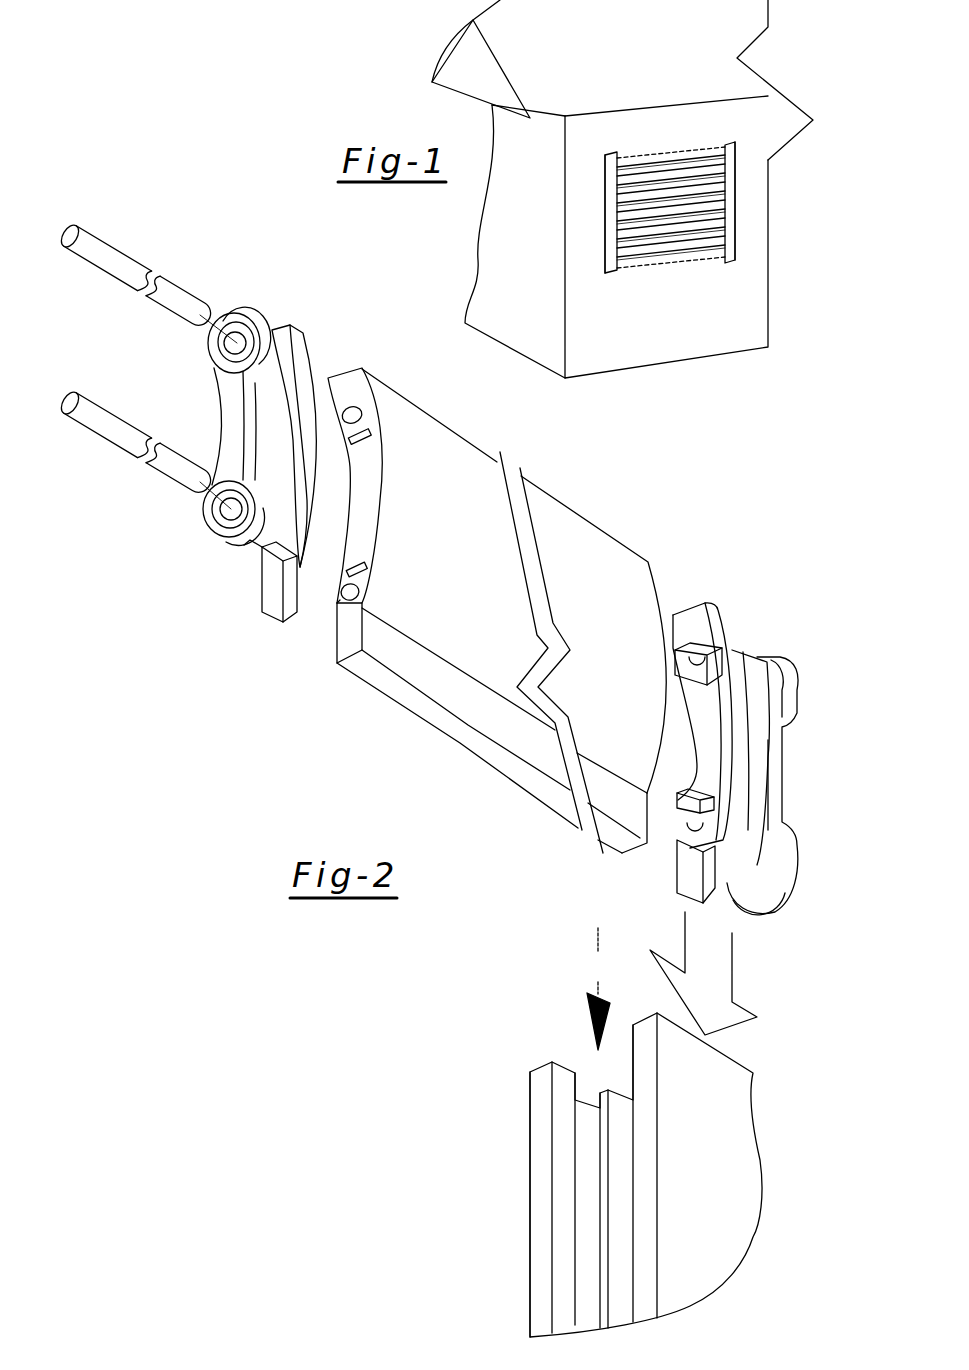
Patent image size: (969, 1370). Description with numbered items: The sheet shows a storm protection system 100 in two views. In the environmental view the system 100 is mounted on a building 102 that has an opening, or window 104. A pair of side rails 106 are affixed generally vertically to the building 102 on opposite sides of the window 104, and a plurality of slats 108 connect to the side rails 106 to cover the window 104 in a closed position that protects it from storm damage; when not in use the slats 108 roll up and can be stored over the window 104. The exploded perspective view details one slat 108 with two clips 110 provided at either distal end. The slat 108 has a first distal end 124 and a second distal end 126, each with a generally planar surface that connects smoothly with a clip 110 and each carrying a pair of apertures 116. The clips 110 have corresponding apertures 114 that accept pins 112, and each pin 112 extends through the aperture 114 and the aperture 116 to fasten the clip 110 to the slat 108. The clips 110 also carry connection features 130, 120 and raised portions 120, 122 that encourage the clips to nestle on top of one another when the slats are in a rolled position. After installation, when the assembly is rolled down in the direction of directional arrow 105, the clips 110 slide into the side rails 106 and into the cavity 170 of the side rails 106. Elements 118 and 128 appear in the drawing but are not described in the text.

In FIG. 1, the storm protection system 100 is at (651, 189).
In FIG. 2, the storm protection system 100 is at (283, 729).
In FIG. 1, the building 102 is at (757, 112).
In FIG. 1, the window 104 is at (686, 228).
In FIG. 2, the directional arrow 105 is at (710, 957).
In FIG. 1, the side rail 106 is at (731, 228).
In FIG. 2, the side rail 106 is at (693, 1145).
In FIG. 1, the slat 108 is at (713, 200).
In FIG. 2, the slat 108 is at (491, 661).
In FIG. 2, the clip 110 is at (463, 564).
In FIG. 2, the pin 112 is at (110, 262).
In FIG. 2, the aperture 114 is at (220, 513).
In FIG. 2, the aperture 116 is at (242, 543).
In FIG. 2, the intermediate plate 118 is at (300, 420).
In FIG. 2, the raised portion 120 is at (288, 398).
In FIG. 2, the raised portion 122 is at (234, 454).
In FIG. 2, the first distal end 124 is at (340, 640).
In FIG. 2, the second distal end 126 is at (630, 848).
In FIG. 2, the arm body 128 is at (207, 452).
In FIG. 2, the connection feature 130 is at (263, 588).
In FIG. 2, the cavity 170 is at (597, 989).